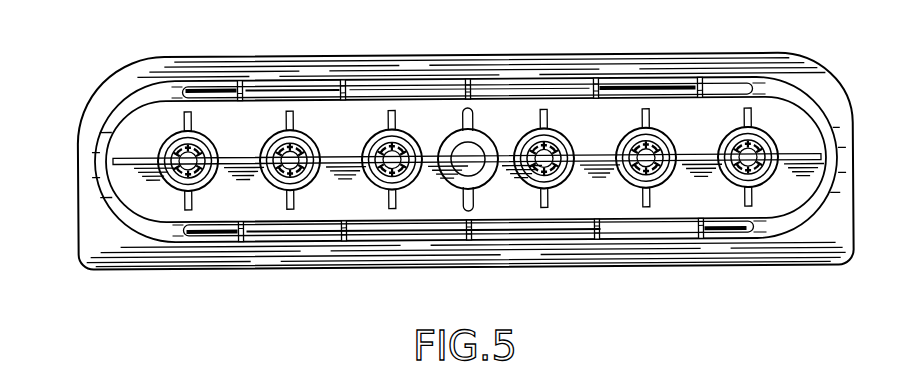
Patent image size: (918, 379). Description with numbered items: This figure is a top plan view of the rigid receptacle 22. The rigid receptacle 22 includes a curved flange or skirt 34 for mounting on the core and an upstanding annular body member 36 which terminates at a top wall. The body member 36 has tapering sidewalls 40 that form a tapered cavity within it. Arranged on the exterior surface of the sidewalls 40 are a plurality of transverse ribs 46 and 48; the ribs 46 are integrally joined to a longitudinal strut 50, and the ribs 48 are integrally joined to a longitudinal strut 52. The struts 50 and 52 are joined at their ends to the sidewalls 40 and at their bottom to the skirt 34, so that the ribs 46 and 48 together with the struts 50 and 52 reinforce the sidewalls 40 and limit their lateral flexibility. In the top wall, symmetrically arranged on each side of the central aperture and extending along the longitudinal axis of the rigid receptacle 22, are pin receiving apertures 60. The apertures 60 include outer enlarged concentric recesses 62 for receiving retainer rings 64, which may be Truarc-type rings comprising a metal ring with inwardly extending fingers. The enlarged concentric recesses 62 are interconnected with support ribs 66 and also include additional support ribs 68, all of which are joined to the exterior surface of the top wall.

The rigid receptacle 22 is at (82, 97).
The curved flange or skirt 34 is at (766, 64).
The annular body member 36 is at (834, 99).
The tapering sidewalls 40 is at (127, 112).
The transverse ribs 46 is at (247, 80).
The transverse ribs 48 is at (700, 238).
The longitudinal strut 50 is at (508, 74).
The longitudinal strut 52 is at (400, 244).
The pin receiving apertures 60 is at (192, 176).
The outer enlarged concentric recesses 62 is at (303, 145).
The retainer rings 64 is at (196, 141).
The support ribs 66 is at (244, 159).
The additional support ribs 68 is at (812, 160).